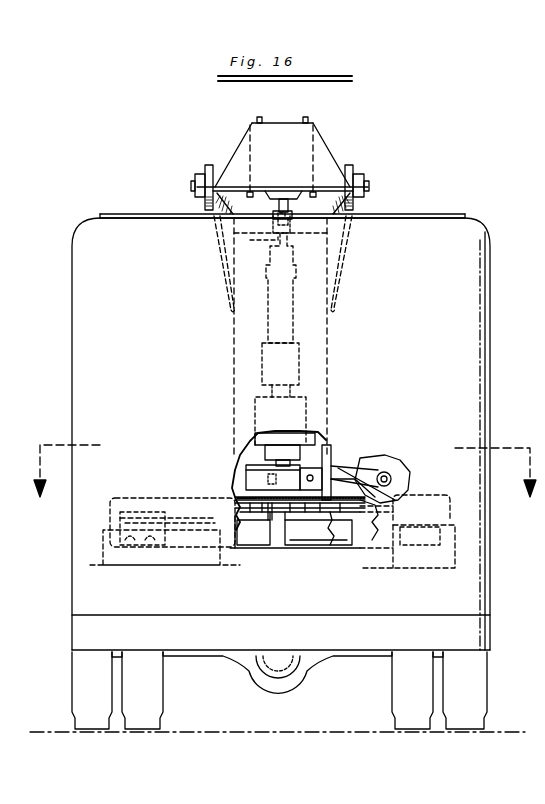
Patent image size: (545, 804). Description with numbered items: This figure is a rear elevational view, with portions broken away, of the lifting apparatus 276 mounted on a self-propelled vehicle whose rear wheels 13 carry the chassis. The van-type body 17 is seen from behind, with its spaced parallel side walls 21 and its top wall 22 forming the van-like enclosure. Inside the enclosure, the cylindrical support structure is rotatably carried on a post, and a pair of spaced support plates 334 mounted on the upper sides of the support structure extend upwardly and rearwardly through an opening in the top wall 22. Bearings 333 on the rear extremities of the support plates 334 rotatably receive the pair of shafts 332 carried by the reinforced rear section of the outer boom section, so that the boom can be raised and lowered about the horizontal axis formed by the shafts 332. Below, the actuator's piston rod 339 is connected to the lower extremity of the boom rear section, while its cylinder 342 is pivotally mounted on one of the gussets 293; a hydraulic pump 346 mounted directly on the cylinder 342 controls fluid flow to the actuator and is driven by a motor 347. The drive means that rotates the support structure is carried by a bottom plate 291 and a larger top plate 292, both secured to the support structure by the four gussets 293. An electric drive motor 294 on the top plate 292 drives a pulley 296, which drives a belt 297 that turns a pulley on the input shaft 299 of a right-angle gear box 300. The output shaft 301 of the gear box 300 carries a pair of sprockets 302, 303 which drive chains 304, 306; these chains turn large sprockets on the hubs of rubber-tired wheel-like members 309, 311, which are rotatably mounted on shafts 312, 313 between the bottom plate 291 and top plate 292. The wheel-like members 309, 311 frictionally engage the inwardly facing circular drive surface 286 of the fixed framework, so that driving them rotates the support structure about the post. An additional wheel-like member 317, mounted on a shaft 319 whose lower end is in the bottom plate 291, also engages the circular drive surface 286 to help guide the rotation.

The rear wheels 13 is at (135, 685).
The body 17 is at (72, 271).
The side walls 21 is at (80, 330).
The top wall 22 is at (468, 216).
The lifting apparatus 276 is at (408, 190).
The shafts 332 is at (193, 185).
The bearings 333 is at (206, 171).
The support plates 334 is at (218, 184).
The piston rod 339 is at (280, 334).
The cylinder 342 is at (293, 330).
The motor 347 is at (300, 369).
The hydraulic pump 346 is at (307, 410).
The gussets 293 is at (220, 458).
The input shaft 299 is at (327, 450).
The belt 297 is at (357, 456).
The pulley 296 is at (385, 472).
The electric drive motor 294 is at (405, 462).
The top plate 292 is at (436, 498).
The right-angle gear box 300 is at (250, 480).
The output shaft 301 is at (310, 475).
The shaft 313 is at (245, 492).
The sprocket 302 is at (240, 510).
The chain 304 is at (372, 516).
The sprocket 303 is at (280, 545).
The chain 306 is at (258, 540).
The rubber-tired wheel-like member 309 is at (305, 530).
The rubber-tired wheel-like member 311 is at (268, 520).
The shaft 312 is at (335, 520).
The bottom plate 291 is at (395, 568).
The circular drive surface 286 is at (130, 550).
The shafts 319 is at (155, 550).
The wheel-like member 317 is at (165, 550).